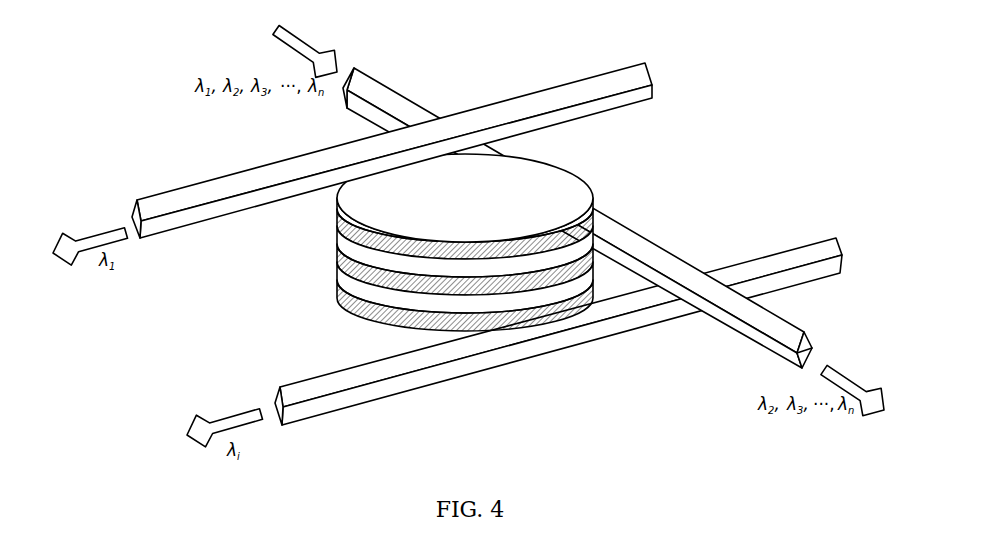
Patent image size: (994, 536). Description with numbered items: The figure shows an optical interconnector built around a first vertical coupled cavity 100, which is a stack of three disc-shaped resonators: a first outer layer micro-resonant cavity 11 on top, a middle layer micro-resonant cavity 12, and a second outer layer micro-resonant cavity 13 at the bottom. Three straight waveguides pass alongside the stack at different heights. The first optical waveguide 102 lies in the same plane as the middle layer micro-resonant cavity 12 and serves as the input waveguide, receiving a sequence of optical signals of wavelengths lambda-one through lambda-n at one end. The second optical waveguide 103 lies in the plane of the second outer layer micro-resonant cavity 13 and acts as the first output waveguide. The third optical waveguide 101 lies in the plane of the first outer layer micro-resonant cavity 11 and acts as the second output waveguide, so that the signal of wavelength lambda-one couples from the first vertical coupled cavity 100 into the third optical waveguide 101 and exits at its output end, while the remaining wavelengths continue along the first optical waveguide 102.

The first vertical coupled cavity 100 is at (455, 235).
The first outer layer micro-resonant cavity 11 is at (337, 209).
The middle layer micro-resonant cavity 12 is at (337, 245).
The second outer layer micro-resonant cavity 13 is at (337, 281).
The third optical waveguide 101 is at (503, 99).
The first optical waveguide 102 is at (806, 330).
The second optical waveguide 103 is at (790, 251).